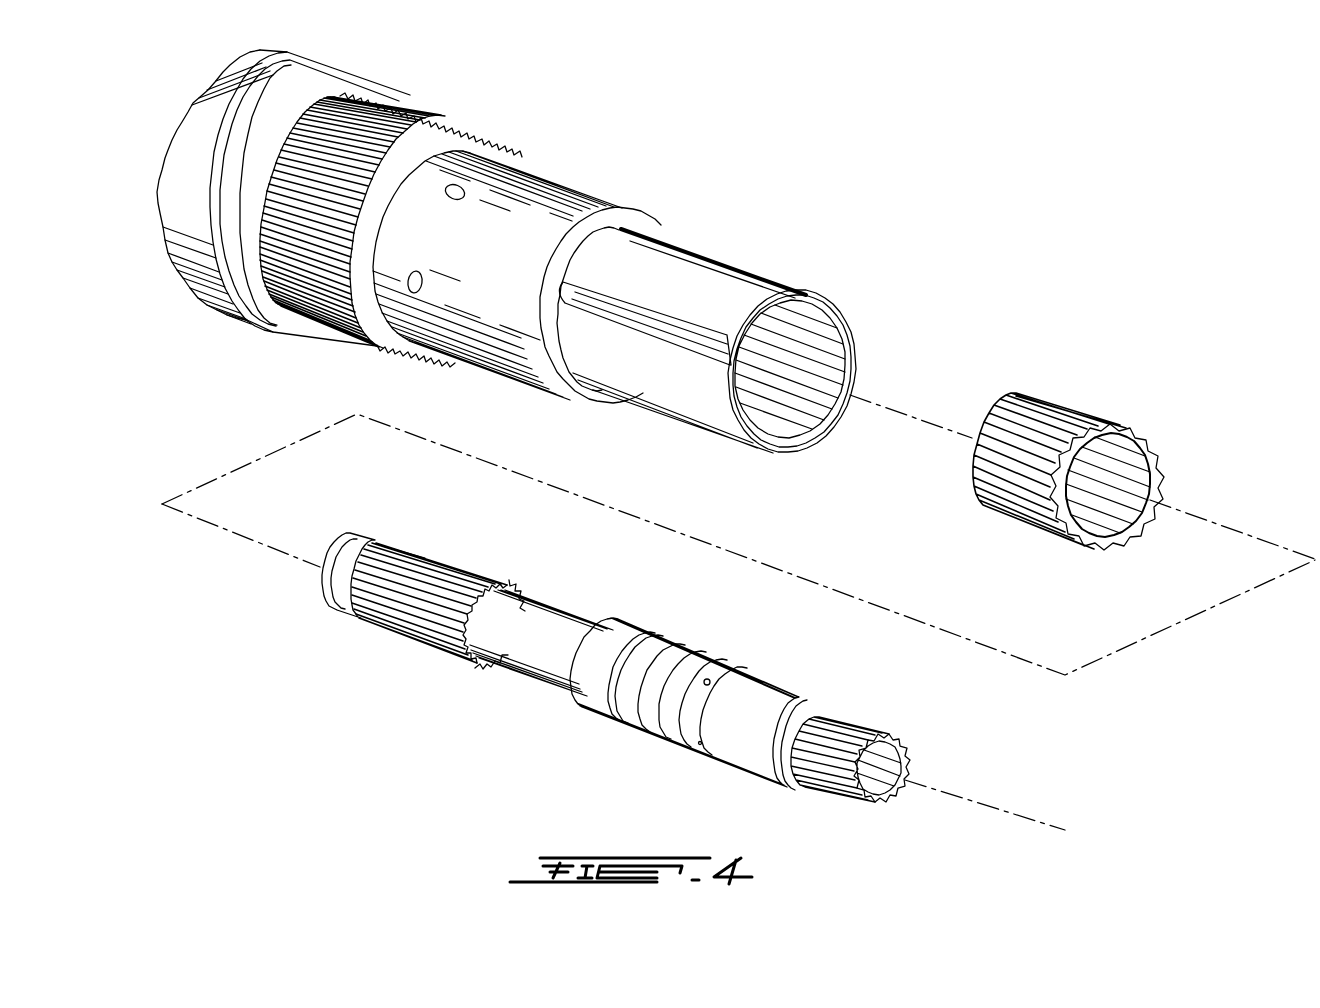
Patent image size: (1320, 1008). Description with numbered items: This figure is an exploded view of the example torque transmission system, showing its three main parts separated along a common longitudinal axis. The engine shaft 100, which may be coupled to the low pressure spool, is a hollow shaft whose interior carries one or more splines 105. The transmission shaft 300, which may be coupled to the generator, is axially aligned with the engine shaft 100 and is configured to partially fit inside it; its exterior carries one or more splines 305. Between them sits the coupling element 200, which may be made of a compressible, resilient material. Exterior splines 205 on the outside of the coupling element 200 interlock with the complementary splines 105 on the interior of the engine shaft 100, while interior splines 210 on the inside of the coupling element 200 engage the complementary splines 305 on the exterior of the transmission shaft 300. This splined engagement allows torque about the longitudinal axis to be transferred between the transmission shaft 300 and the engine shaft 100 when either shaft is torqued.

The engine shaft 100 is at (509, 251).
The splines 105 is at (806, 347).
The coupling element 200 is at (1078, 440).
The exterior splines 205 is at (1066, 397).
The interior splines 210 is at (1120, 528).
The transmission shaft 300 is at (601, 650).
The splines 305 is at (416, 574).